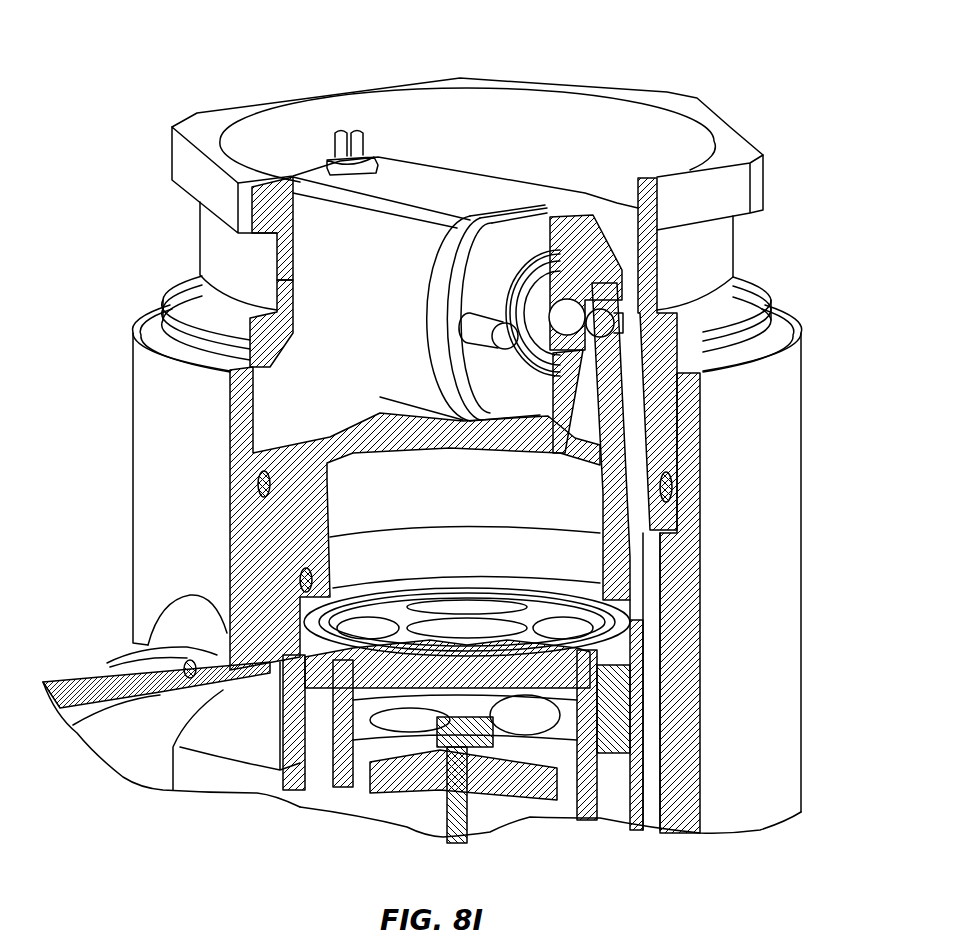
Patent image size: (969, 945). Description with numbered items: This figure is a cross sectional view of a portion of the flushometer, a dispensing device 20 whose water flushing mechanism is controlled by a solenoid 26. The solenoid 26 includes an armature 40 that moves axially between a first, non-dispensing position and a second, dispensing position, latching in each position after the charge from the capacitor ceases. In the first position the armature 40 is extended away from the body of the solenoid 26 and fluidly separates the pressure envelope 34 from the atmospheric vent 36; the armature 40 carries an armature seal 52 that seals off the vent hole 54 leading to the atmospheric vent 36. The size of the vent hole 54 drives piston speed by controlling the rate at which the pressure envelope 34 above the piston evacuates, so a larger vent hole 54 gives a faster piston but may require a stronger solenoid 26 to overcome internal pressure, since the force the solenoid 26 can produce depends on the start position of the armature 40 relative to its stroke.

The dispensing device 20 is at (245, 60).
The solenoid 26 is at (437, 180).
The armature 40 is at (557, 300).
The armature seal 52 is at (580, 312).
The vent hole 54 is at (640, 348).
The pressure envelope 34 is at (583, 424).
The atmospheric vent 36 is at (647, 543).